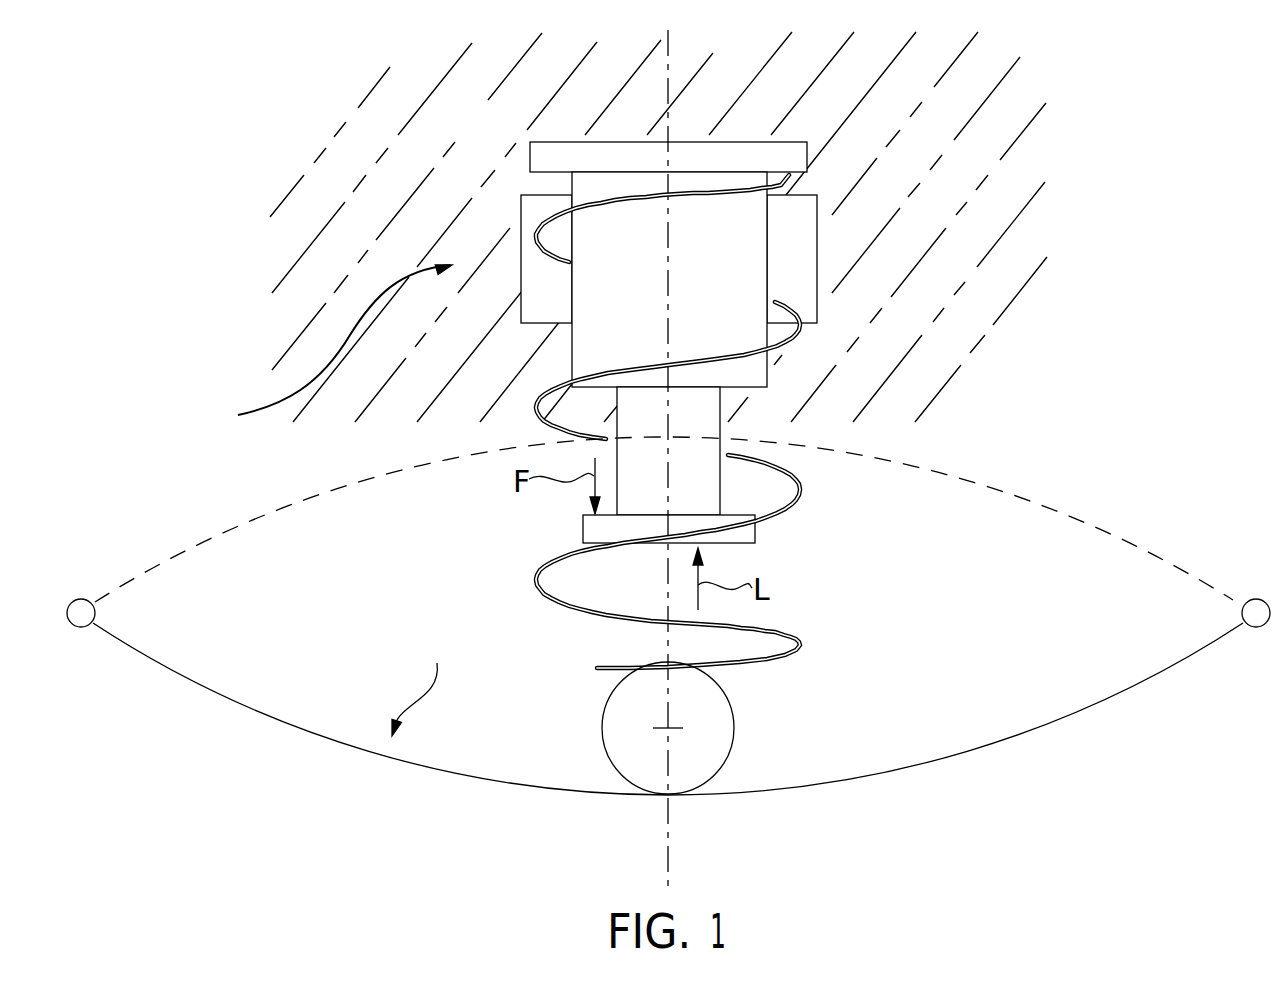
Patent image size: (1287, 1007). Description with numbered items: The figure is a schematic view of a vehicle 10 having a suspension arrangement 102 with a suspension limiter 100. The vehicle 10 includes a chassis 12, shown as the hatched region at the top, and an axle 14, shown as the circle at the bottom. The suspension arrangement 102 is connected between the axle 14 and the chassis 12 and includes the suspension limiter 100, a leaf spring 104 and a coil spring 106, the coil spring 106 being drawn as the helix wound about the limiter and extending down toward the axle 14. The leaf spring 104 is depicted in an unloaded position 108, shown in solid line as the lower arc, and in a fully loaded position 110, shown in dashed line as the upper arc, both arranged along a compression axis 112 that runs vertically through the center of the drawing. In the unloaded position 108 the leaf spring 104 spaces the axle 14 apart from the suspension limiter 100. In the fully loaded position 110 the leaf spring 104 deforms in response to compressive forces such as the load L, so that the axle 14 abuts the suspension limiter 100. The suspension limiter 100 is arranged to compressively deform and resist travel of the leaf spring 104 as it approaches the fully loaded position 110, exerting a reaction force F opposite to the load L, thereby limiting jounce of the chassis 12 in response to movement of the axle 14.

The vehicle 10 is at (224, 100).
The chassis 12 is at (1013, 292).
The axle 14 is at (736, 727).
The suspension limiter 100 is at (321, 355).
The suspension arrangement 102 is at (208, 697).
The leaf spring 104 is at (1093, 703).
The coil spring 106 is at (778, 630).
The unloaded position 108 is at (426, 684).
The fully loaded position 110 is at (1089, 517).
The compression axis 112 is at (669, 266).